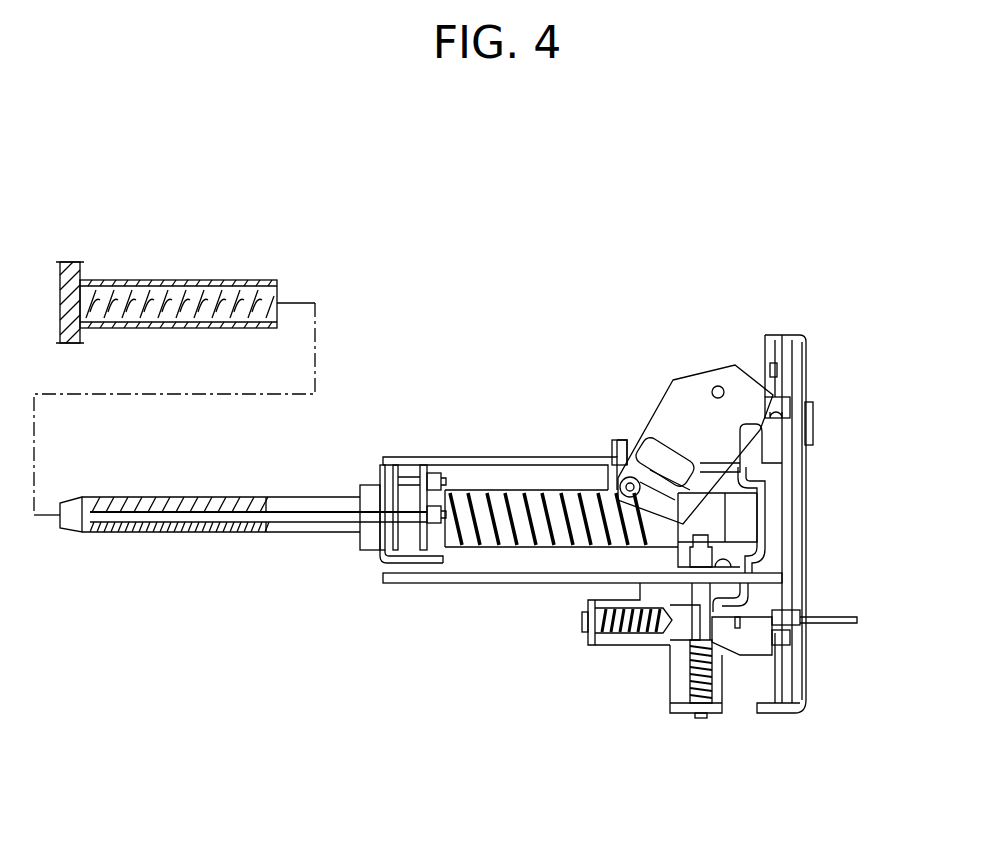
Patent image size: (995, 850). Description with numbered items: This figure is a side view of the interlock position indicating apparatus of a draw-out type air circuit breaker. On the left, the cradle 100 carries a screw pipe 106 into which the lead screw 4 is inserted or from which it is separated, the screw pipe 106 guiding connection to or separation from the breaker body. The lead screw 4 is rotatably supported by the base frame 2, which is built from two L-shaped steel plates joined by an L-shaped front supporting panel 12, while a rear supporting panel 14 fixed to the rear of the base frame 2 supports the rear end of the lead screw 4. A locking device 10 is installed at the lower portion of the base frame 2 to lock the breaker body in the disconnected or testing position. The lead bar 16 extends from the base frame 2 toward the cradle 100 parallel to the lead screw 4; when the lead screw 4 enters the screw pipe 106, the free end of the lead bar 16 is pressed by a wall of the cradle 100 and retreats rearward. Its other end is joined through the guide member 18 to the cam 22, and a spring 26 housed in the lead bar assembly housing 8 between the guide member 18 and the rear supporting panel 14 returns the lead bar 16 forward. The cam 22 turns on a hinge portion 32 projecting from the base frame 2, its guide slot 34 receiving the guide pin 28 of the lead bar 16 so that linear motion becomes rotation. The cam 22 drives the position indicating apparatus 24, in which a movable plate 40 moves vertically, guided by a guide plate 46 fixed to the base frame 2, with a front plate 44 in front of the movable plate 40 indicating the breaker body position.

The cradle 100 is at (86, 283).
The screw pipe 106 is at (230, 283).
The lead screw 4 is at (165, 505).
The lead bar 16 is at (230, 520).
The guide member 18 is at (395, 490).
The housing 8 is at (508, 450).
The front supporting panel 12 is at (378, 562).
The spring 26 is at (468, 548).
The base frame 2 is at (500, 583).
The cam 22 is at (683, 410).
The hinge portion 32 is at (720, 386).
The guide pin 28 is at (628, 478).
The guide plate 46 is at (784, 345).
The front plate 44 is at (805, 348).
The movable plate 40 is at (792, 378).
The position indicating apparatus 24 is at (822, 480).
The locking device 10 is at (595, 625).
The guide slot 34 is at (630, 612).
The rear supporting panel 14 is at (672, 575).